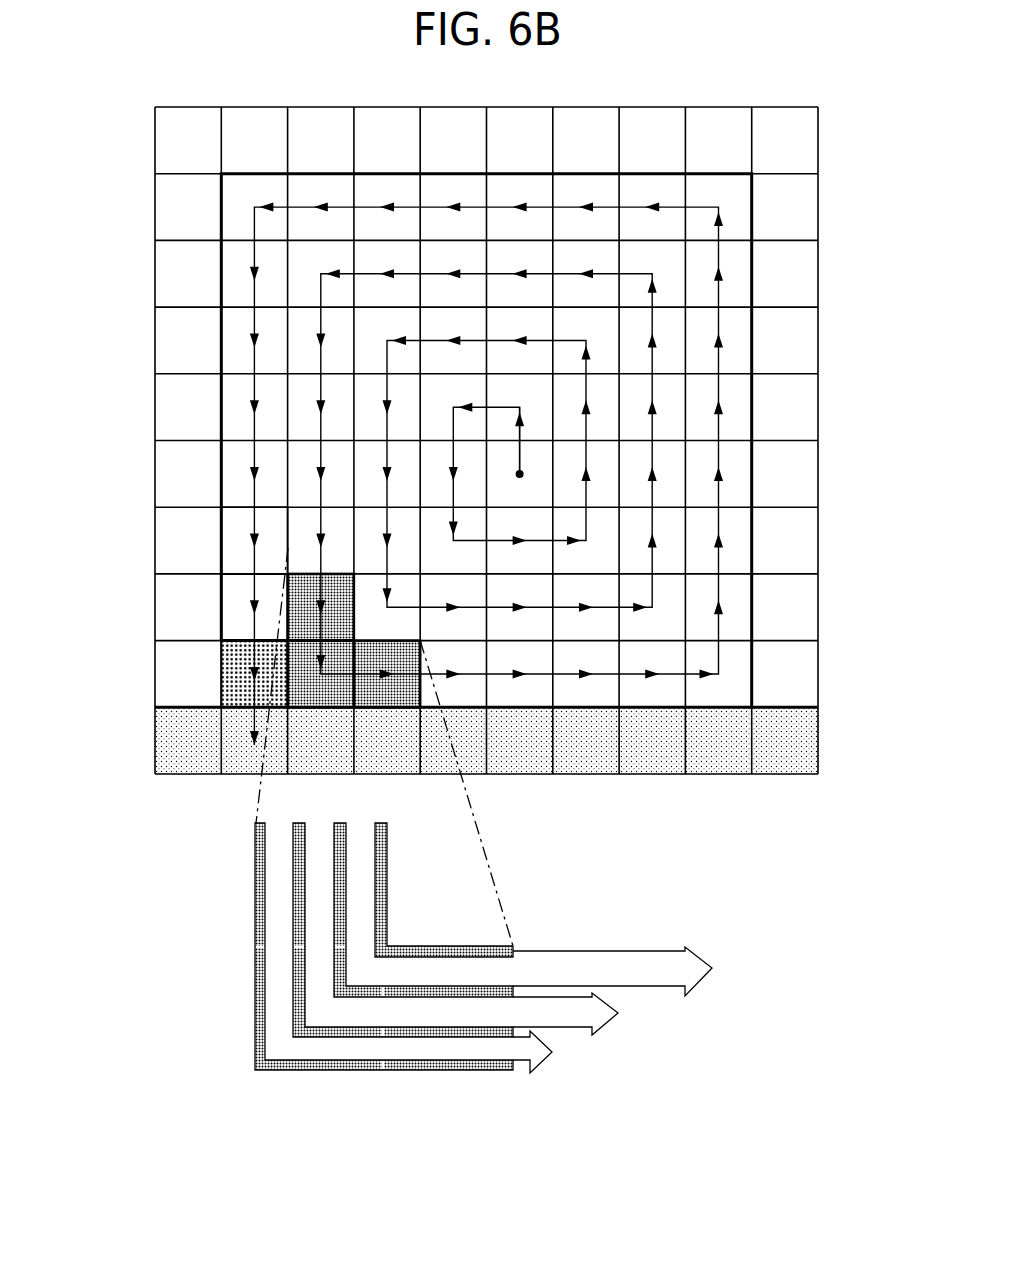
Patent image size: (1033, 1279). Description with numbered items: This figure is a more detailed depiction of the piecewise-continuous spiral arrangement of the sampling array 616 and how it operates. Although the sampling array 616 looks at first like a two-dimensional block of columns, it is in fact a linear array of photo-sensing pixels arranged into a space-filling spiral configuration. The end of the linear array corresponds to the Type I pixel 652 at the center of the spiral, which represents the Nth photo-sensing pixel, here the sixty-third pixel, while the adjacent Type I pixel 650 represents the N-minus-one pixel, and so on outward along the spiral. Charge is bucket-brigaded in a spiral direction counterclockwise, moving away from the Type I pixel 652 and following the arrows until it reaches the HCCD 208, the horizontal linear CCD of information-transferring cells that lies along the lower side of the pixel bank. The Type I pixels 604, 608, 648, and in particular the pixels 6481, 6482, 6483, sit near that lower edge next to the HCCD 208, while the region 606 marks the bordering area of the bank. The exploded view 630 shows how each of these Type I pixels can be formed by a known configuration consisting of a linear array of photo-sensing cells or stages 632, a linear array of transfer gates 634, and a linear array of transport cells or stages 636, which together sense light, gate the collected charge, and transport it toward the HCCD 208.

The HCCD (horizontal linear CCD) 208 is at (147, 774).
The Type I pixel 604 is at (247, 690).
The imaging area boundary 606 is at (237, 548).
The Type I pixel 608 is at (240, 600).
The sampling array 616 is at (652, 152).
The exploded view 630 is at (493, 872).
The linear array of photo-sensing cells/stages 632 is at (602, 951).
The linear array of transfer gates 634 is at (572, 1020).
The linear array of transport cells/stages 636 is at (517, 1073).
The Type I pixels 648 is at (300, 854).
The Type I pixel 6481 is at (255, 893).
The Type I pixel 6482 is at (255, 994).
The Type I pixel 6483 is at (423, 1072).
The Type I pixel 650 is at (518, 392).
The Type I pixel 652 is at (537, 458).